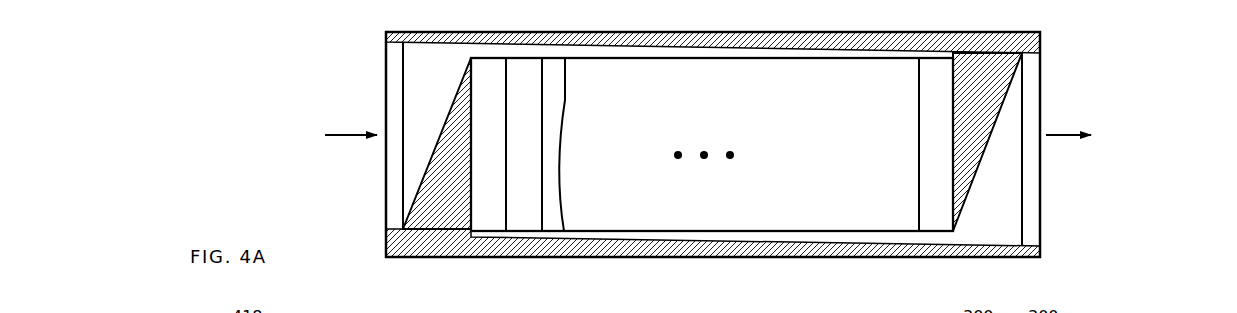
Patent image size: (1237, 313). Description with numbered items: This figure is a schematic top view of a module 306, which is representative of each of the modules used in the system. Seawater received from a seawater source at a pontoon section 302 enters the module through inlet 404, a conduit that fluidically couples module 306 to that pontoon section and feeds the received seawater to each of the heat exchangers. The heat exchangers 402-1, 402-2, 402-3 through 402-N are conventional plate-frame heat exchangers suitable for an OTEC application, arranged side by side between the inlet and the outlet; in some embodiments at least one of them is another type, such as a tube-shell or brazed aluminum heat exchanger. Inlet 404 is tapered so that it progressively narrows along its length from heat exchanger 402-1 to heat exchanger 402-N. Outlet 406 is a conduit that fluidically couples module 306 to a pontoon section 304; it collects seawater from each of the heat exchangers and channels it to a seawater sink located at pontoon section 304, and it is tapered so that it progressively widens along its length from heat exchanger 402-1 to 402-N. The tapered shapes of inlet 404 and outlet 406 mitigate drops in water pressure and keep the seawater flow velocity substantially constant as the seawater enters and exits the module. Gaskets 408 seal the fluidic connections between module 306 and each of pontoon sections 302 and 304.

The module 306 is at (252, 49).
The pontoon section 302 is at (276, 154).
The pontoon section 304 is at (1132, 163).
The inlet 404 is at (451, 59).
The outlet 406 is at (1006, 230).
The gaskets 408 is at (392, 187).
The heat exchanger 402-1 is at (489, 221).
The heat exchanger 402-2 is at (524, 221).
The heat exchanger 402-3 is at (557, 110).
The heat exchanger 402-N is at (936, 221).